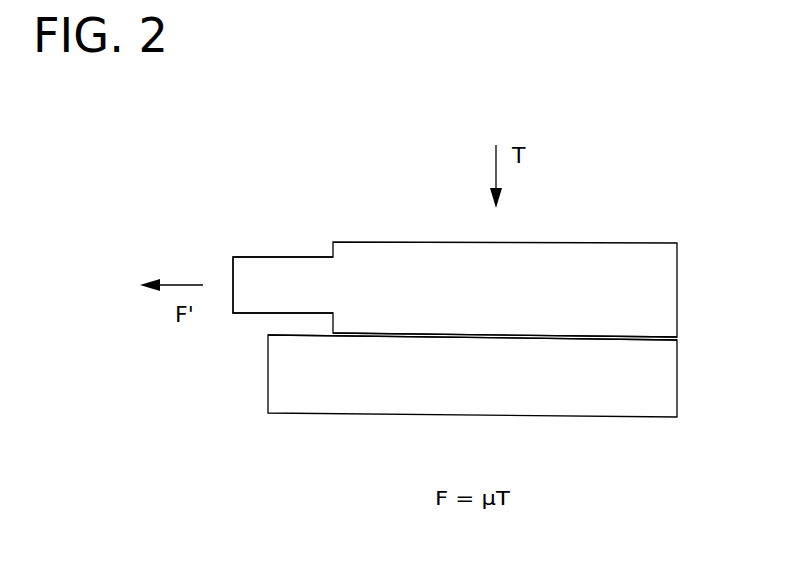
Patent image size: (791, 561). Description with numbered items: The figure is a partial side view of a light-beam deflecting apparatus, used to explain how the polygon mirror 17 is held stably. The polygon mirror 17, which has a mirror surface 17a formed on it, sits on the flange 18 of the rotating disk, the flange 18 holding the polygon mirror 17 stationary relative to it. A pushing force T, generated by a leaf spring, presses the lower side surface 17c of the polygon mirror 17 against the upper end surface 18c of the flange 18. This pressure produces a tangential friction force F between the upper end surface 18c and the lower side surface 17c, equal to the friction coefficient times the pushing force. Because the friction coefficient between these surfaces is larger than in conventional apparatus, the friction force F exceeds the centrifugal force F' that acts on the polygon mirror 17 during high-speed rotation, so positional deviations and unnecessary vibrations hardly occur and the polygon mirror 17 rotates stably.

The polygon mirror 17 is at (593, 242).
The mirror surface 17a is at (232, 268).
The lower side surface 17c is at (658, 335).
The flange 18 is at (580, 388).
The upper end surface 18c is at (642, 340).